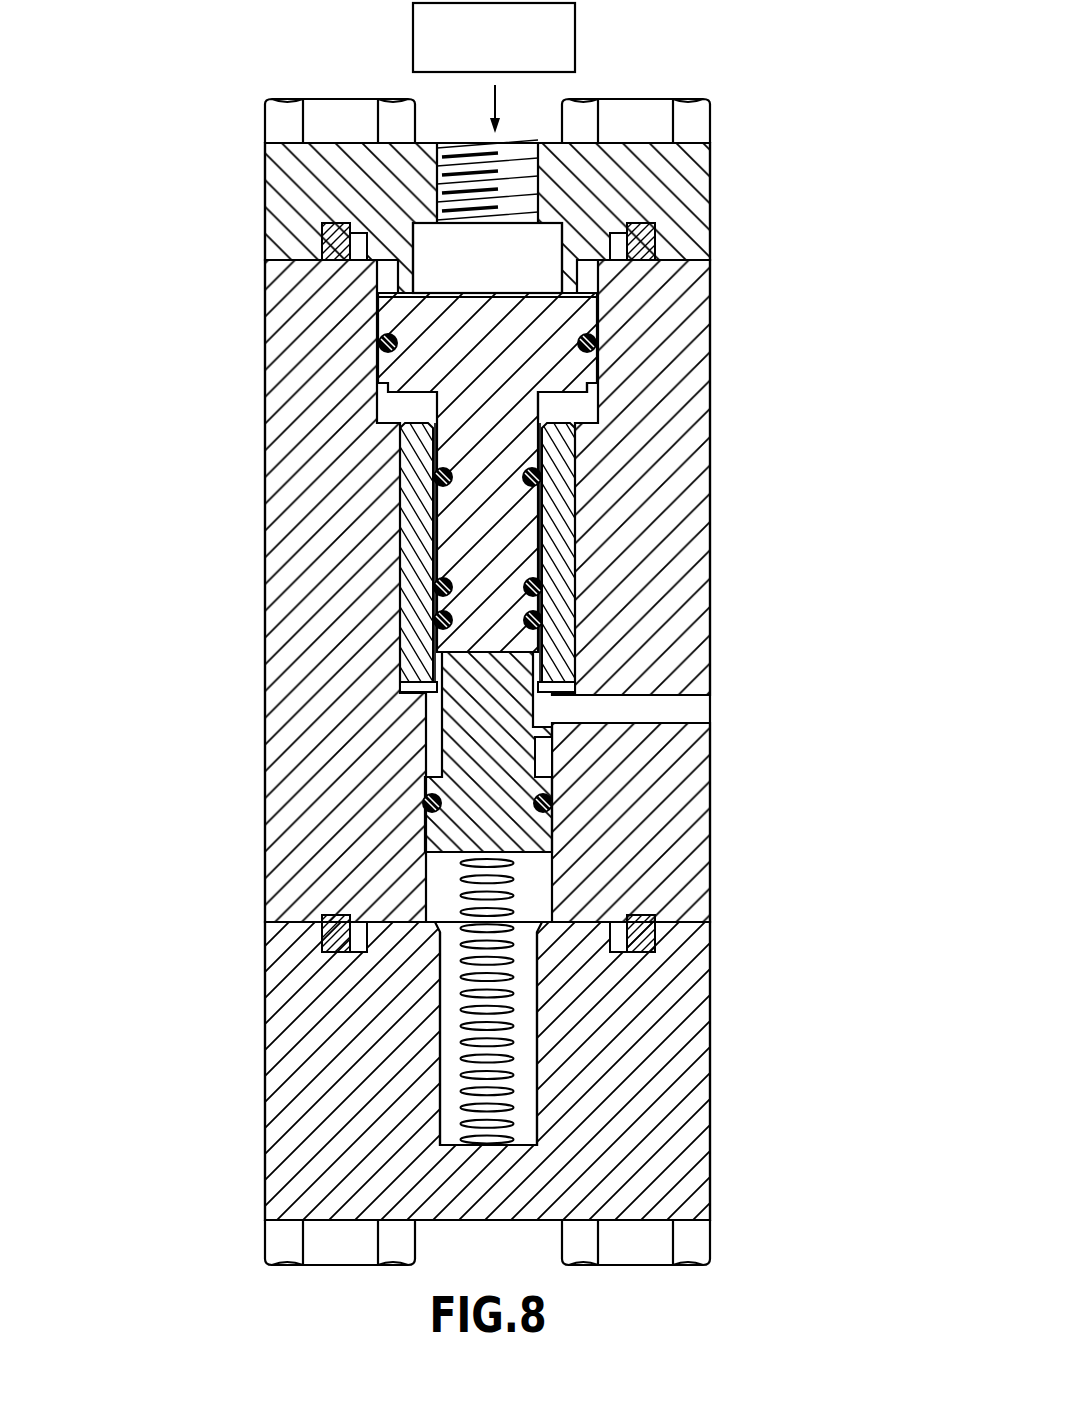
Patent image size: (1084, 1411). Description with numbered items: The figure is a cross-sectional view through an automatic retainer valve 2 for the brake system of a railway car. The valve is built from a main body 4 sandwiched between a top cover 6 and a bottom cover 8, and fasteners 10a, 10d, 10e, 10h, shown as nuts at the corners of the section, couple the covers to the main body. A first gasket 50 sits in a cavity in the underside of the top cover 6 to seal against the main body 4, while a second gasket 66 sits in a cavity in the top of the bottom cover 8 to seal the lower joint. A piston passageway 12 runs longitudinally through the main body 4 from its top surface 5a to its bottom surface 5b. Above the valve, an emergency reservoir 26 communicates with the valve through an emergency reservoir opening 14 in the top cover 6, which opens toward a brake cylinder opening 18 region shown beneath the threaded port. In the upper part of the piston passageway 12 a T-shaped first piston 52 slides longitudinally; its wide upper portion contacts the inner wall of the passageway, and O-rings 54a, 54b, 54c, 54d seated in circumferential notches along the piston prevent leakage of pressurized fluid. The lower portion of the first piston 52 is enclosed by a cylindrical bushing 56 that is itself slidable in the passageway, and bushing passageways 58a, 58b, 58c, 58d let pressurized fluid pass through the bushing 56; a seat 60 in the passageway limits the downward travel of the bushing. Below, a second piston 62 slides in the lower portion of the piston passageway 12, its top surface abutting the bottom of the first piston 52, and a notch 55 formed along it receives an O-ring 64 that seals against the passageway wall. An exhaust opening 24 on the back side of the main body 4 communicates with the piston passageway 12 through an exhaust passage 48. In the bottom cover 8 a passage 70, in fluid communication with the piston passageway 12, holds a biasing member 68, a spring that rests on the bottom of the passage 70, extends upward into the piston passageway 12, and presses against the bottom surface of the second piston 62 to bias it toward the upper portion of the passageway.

The automatic retainer valve 2 is at (750, 340).
The main body 4 is at (694, 498).
The top surface 5a is at (700, 258).
The bottom surface 5b is at (687, 921).
The top cover 6 is at (702, 183).
The bottom cover 8 is at (694, 1004).
The fastener 10a is at (632, 108).
The fastener 10d is at (332, 108).
The fastener 10e is at (695, 1250).
The fastener 10h is at (275, 1240).
The piston passageway 12 is at (583, 407).
The emergency reservoir opening 14 is at (464, 148).
The brake cylinder opening 18 is at (432, 243).
The exhaust opening 24 is at (708, 700).
The emergency reservoir 26 is at (578, 31).
The exhaust passage 48 is at (668, 720).
The first gasket 50 is at (333, 238).
The first piston 52 is at (400, 318).
The O-ring 54a is at (385, 348).
The O-ring 54b is at (440, 478).
The O-ring 54c is at (440, 700).
The O-ring 54d is at (445, 745).
The notch 55 is at (437, 628).
The bushing 56 is at (410, 500).
The bushing passageway 58a is at (440, 590).
The bushing passageway 58b is at (418, 688).
The bushing passageway 58c is at (548, 565).
The bushing passageway 58d is at (572, 603).
The seat 60 is at (430, 806).
The second piston 62 is at (515, 790).
The O-ring 64 is at (460, 878).
The second gasket 66 is at (335, 935).
The biasing member 68 is at (462, 1025).
The passage 70 is at (445, 1112).